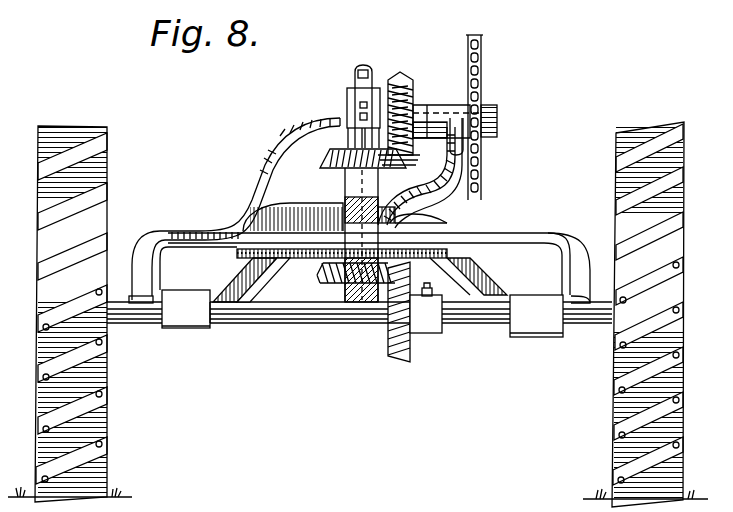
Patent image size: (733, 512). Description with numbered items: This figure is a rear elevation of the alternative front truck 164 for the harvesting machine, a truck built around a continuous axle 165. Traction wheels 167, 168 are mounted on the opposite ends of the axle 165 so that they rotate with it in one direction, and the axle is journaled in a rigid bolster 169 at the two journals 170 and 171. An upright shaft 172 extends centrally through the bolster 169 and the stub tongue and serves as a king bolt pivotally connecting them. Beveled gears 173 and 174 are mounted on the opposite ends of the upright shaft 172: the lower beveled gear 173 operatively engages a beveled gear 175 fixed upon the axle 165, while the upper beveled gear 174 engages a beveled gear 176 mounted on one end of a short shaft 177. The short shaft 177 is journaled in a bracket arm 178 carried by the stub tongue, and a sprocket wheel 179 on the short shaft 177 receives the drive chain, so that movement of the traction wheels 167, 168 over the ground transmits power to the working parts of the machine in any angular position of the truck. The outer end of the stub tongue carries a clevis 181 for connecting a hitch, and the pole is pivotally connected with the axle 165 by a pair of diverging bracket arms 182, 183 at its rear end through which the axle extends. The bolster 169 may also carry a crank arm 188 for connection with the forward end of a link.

The front truck 164 is at (317, 361).
The continuous axle 165 is at (238, 316).
The traction wheel 167 is at (107, 441).
The traction wheel 168 is at (613, 441).
The rigid bolster 169 is at (527, 233).
The journal 170 is at (144, 330).
The journal 171 is at (580, 338).
The upright shaft 172 is at (345, 190).
The beveled gear 173 is at (332, 272).
The beveled gear 174 is at (338, 160).
The beveled gear 175 is at (412, 348).
The beveled gear 176 is at (402, 74).
The short shaft 177 is at (438, 105).
The bracket arm 178 is at (447, 203).
The sprocket wheel 179 is at (483, 70).
The clevis 181 is at (357, 74).
The bracket arm 182 is at (249, 283).
The bracket arm 183 is at (566, 289).
The crank arm 188 is at (313, 119).